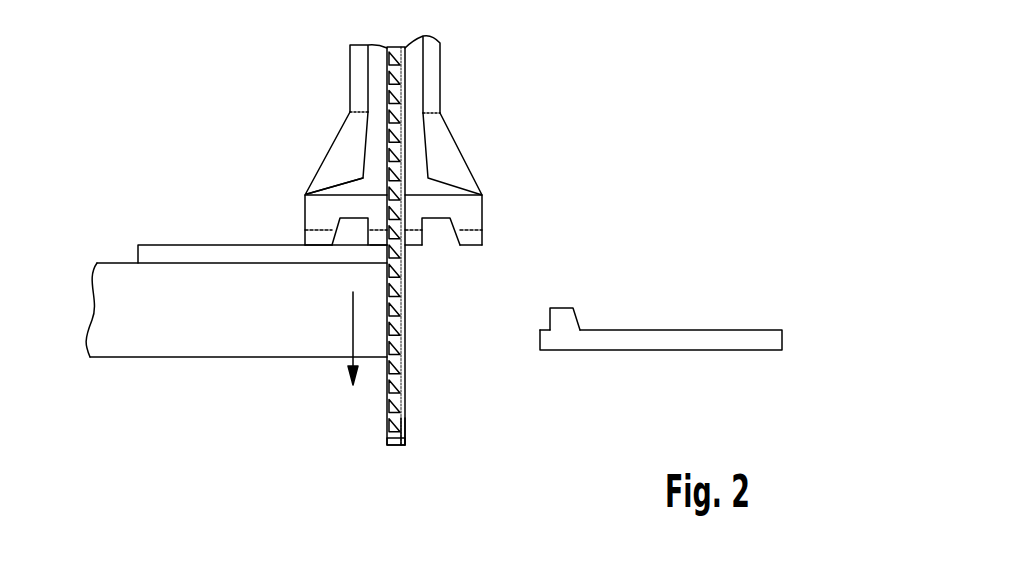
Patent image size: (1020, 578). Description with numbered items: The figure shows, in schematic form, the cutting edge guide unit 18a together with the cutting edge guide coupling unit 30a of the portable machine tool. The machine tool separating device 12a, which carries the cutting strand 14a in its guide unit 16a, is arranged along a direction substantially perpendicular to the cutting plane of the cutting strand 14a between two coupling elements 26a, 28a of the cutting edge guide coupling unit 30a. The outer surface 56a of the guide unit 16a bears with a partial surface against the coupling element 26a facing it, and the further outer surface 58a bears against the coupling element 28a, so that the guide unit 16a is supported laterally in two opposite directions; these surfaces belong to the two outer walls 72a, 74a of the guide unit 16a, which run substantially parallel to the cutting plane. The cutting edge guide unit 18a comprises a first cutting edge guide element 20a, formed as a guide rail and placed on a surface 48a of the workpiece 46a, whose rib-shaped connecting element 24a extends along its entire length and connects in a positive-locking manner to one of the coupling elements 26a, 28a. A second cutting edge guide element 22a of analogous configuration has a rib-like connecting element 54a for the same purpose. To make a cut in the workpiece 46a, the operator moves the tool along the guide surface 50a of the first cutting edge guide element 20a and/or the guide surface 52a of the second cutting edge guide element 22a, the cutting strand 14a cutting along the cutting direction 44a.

The machine tool separating device 12a is at (364, 458).
The cutting strand 14a is at (402, 447).
The guide unit 16a is at (407, 385).
The cutting edge guide unit 18a is at (135, 178).
The first cutting edge guide element 20a is at (160, 248).
The second cutting edge guide element 22a is at (758, 338).
The rib-shaped connecting element 24a is at (350, 240).
The coupling element 26a is at (355, 214).
The coupling element 28a is at (433, 217).
The cutting edge guide coupling unit 30a is at (520, 123).
The cutting direction 44a is at (353, 330).
The workpiece 46a is at (146, 341).
The surface 48a is at (116, 259).
The guide surface 50a is at (401, 247).
The guide surface 52a is at (531, 338).
The rib-like connecting element 54a is at (563, 318).
The outer surface 56a is at (380, 405).
The further outer surface 58a is at (408, 288).
The outer wall 72a is at (383, 430).
The outer wall 74a is at (407, 425).